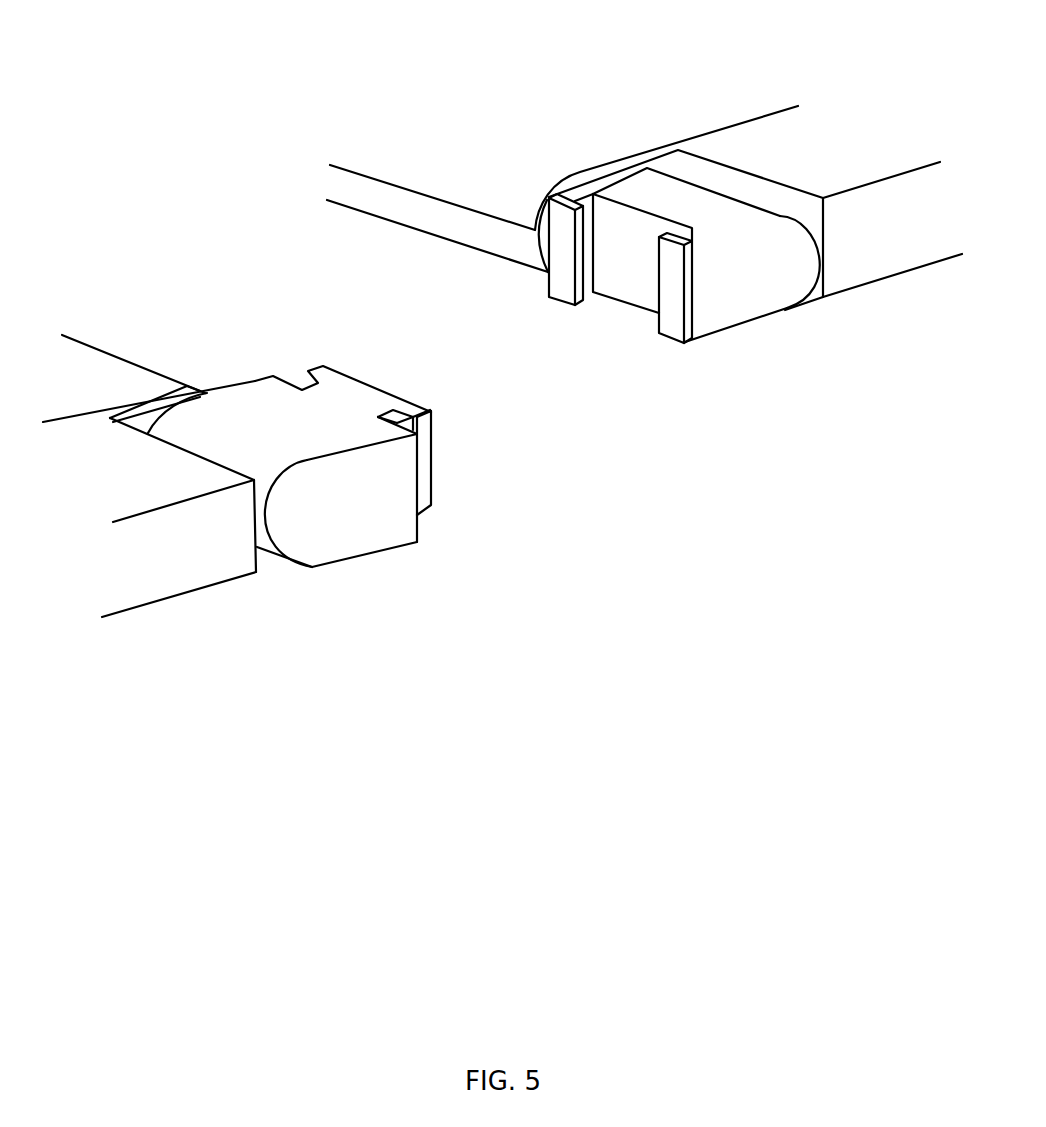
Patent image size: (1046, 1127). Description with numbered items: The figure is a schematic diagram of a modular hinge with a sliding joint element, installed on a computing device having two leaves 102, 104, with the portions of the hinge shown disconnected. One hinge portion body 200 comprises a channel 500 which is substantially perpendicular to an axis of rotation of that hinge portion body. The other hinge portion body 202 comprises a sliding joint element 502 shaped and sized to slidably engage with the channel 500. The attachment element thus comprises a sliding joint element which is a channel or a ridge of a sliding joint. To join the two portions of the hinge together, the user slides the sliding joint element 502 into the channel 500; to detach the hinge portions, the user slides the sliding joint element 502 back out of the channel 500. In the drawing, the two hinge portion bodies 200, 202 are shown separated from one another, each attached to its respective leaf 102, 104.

The first band portion 102 is at (104, 371).
The second band portion 104 is at (542, 126).
The hinge portion body 200 is at (744, 304).
The hinge portion body 202 is at (372, 528).
The channel 500 is at (636, 286).
The sliding joint element 502 is at (406, 406).